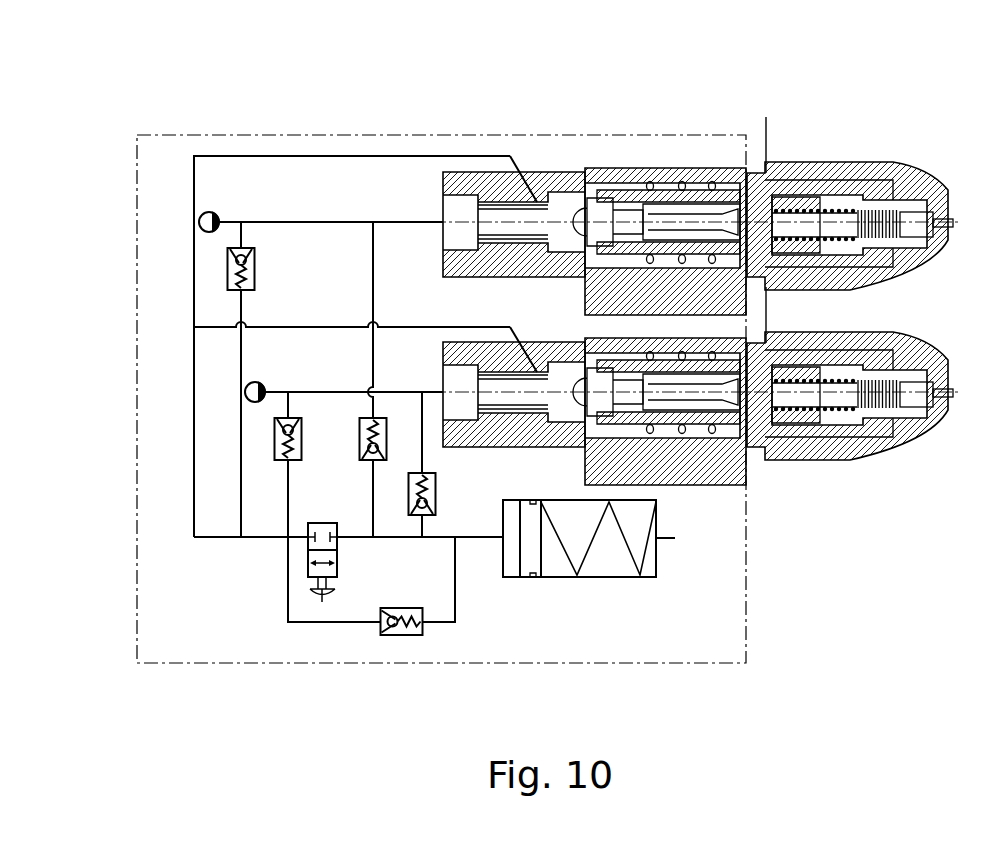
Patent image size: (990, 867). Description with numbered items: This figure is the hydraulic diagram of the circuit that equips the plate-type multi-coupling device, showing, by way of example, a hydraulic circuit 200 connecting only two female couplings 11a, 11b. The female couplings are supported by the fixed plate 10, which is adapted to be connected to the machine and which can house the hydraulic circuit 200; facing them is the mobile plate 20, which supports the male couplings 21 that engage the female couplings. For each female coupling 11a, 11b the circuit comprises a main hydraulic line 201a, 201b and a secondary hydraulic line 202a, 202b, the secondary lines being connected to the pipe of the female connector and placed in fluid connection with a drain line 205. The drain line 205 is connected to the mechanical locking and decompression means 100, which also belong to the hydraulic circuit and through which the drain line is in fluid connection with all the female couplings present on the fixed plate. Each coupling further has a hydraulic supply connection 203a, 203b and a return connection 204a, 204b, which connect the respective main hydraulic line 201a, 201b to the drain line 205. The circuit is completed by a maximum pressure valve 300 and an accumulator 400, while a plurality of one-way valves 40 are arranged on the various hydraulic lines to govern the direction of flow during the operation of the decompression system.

The fixed plate 10 is at (560, 148).
The female coupling 11a is at (694, 163).
The female coupling 11b is at (637, 435).
The mobile plate 20 is at (863, 132).
The male coupling 21 is at (805, 452).
The one-way valve 40 is at (222, 258).
The mechanical locking and decompression means 100 is at (305, 578).
The hydraulic circuit 200 is at (188, 307).
The main hydraulic line 201a is at (257, 222).
The main hydraulic line 201b is at (290, 392).
The secondary hydraulic line 202a is at (353, 155).
The secondary hydraulic line 202b is at (432, 327).
The hydraulic supply connection 203a is at (241, 507).
The hydraulic supply connection 203b is at (288, 492).
The return connection 204a is at (372, 257).
The return connection 204b is at (422, 450).
The drain line 205 is at (190, 483).
The maximum pressure valve 300 is at (430, 636).
The accumulator 400 is at (600, 546).